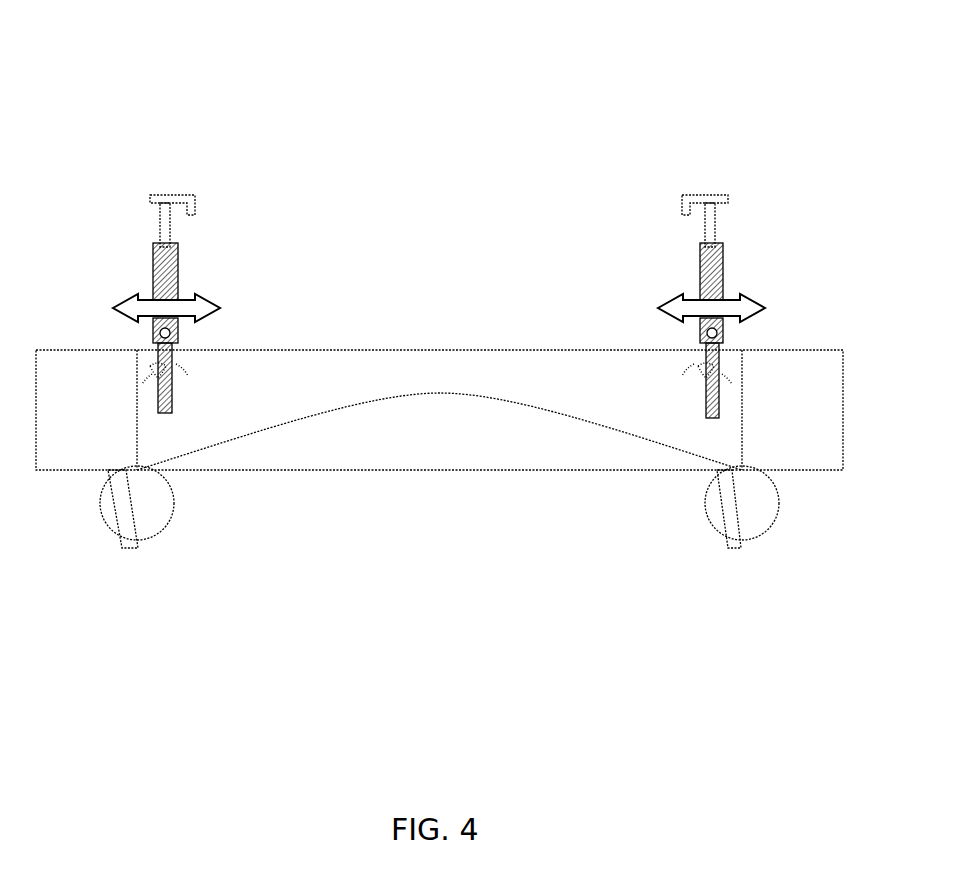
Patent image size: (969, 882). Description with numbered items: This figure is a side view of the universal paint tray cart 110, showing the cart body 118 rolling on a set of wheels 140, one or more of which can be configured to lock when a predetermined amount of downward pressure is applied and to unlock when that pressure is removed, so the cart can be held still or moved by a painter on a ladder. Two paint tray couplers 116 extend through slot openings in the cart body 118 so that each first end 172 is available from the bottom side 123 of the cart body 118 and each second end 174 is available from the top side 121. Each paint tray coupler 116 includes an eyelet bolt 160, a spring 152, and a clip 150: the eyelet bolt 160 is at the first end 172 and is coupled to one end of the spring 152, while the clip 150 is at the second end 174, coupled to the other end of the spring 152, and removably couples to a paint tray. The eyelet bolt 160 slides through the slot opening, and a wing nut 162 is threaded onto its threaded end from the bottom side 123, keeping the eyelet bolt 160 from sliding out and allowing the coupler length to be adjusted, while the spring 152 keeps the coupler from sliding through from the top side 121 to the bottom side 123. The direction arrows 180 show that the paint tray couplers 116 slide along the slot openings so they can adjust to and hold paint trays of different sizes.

The universal paint tray cart 110 is at (609, 63).
The paint tray coupler 116 is at (106, 194).
The cart body 118 is at (340, 352).
The top side 121 is at (464, 214).
The bottom side 123 is at (425, 468).
The set of wheels 140 is at (142, 518).
The clip 150 is at (173, 200).
The spring 152 is at (163, 293).
The eyelet bolt 160 is at (168, 408).
The wing nut 162 is at (148, 380).
The first end 172 is at (197, 431).
The second end 174 is at (137, 232).
The direction arrows 180 is at (208, 302).